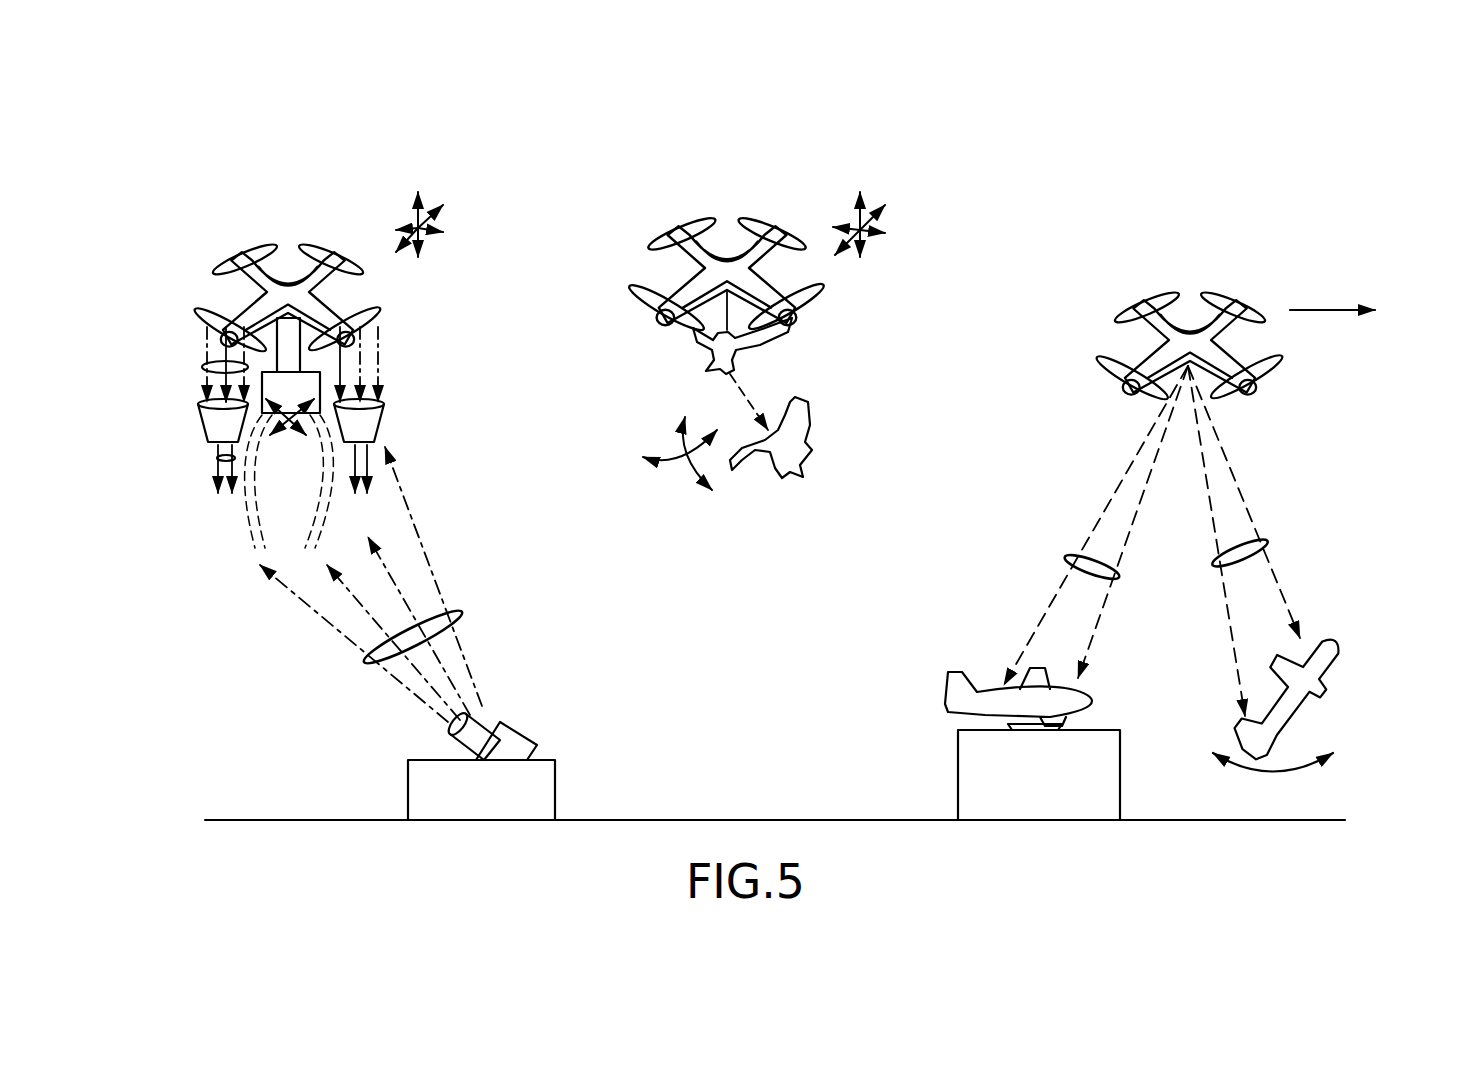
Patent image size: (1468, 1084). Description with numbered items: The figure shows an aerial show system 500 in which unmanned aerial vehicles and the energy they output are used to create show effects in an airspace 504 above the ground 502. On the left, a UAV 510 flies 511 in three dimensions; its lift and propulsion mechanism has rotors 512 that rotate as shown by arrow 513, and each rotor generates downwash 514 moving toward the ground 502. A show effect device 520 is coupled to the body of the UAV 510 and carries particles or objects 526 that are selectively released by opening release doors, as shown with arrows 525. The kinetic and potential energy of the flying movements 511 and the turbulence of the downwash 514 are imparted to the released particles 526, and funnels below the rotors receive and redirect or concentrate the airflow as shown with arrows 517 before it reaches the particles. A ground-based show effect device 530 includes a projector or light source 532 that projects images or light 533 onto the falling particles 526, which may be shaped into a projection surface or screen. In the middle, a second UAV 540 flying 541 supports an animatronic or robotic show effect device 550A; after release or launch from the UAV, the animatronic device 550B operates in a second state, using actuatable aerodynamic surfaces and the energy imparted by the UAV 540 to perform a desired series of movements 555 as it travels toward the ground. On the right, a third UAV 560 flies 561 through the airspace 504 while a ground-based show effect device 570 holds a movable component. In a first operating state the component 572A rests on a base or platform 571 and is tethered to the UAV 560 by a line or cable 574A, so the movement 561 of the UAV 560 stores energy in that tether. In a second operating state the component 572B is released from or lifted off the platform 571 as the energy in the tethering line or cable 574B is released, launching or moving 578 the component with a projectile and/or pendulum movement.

The aerial show system 500 is at (190, 240).
The ground 502 is at (775, 835).
The airspace 504 is at (180, 626).
The UAV 510 is at (238, 257).
The flying movement 511 is at (418, 228).
The rotors 512 is at (181, 330).
The rotor rotation 513 is at (180, 310).
The downwash 514 is at (202, 366).
The redirected airflow 517 is at (187, 408).
The show effect device 520 is at (307, 403).
The release door opening 525 is at (275, 412).
The particles 526 is at (217, 458).
The ground-based show effect device 530 is at (388, 788).
The projector 532 is at (494, 710).
The projected light 533 is at (460, 614).
The second UAV 540 is at (723, 208).
The flying movement 541 is at (860, 230).
The animatronic show effect device 550A is at (775, 345).
The released animatronic device 550B is at (820, 423).
The series of movements 555 is at (680, 445).
The third UAV 560 is at (1193, 272).
The flying movement 561 is at (1333, 307).
The ground-based show effect device 570 is at (927, 772).
The base/platform 571 is at (1054, 794).
The movable component 572A is at (940, 692).
The released movable component 572B is at (1340, 674).
The tethering line/cable 574A is at (1075, 560).
The tethering line/cable 574B is at (1265, 546).
The launch movement 578 is at (1260, 770).